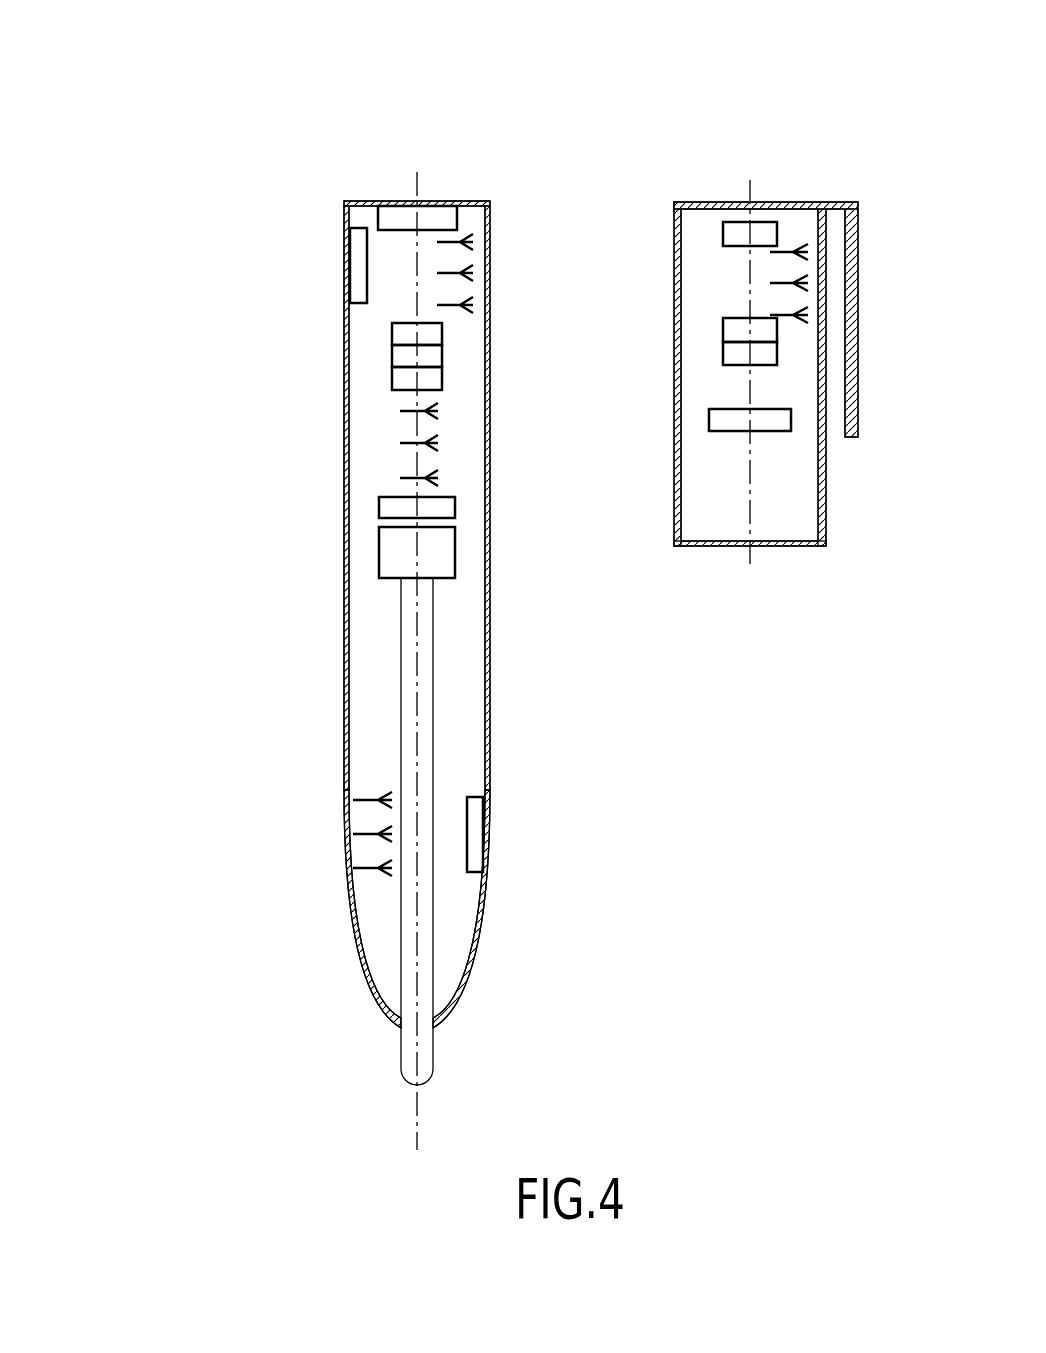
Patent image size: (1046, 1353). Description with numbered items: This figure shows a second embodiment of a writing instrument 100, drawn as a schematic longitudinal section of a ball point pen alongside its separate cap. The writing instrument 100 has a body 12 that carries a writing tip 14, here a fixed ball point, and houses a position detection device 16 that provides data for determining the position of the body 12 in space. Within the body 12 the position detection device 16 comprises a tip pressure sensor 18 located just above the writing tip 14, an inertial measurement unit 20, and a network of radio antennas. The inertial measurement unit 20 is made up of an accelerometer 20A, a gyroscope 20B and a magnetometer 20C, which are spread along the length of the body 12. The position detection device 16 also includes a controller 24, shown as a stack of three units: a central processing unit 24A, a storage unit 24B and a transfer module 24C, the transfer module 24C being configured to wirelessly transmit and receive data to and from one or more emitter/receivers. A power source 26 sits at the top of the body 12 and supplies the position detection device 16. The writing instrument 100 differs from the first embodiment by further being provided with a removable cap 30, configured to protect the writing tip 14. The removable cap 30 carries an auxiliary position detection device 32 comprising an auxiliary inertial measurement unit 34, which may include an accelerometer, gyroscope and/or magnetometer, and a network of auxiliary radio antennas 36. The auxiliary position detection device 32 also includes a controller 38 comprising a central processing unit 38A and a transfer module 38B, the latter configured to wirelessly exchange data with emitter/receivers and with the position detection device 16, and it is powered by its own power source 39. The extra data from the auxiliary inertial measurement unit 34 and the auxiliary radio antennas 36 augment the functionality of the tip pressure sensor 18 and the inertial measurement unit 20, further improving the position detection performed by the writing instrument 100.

The writing instrument 100 is at (655, 112).
The body 12 is at (490, 585).
The writing tip 14 is at (428, 1064).
The position detection device 16 is at (130, 846).
The tip pressure sensor 18 is at (393, 555).
The inertial measurement unit 20 is at (187, 225).
The accelerometer 20A is at (360, 258).
The gyroscope 20B is at (393, 507).
The magnetometer 20C is at (475, 837).
The controller 24 is at (272, 308).
The central processing unit 24A is at (402, 335).
The storage unit 24B is at (402, 357).
The transfer module 24C is at (402, 378).
The power source 26 is at (392, 216).
The removable cap 30 is at (827, 472).
The auxiliary position detection device 32 is at (550, 225).
The auxiliary inertial measurement unit 34 is at (722, 422).
The network of auxiliary radio antennas 36 is at (773, 298).
The controller 38 is at (602, 306).
The central processing unit 38A is at (730, 333).
The transfer module 38B is at (730, 355).
The power source 39 is at (730, 233).